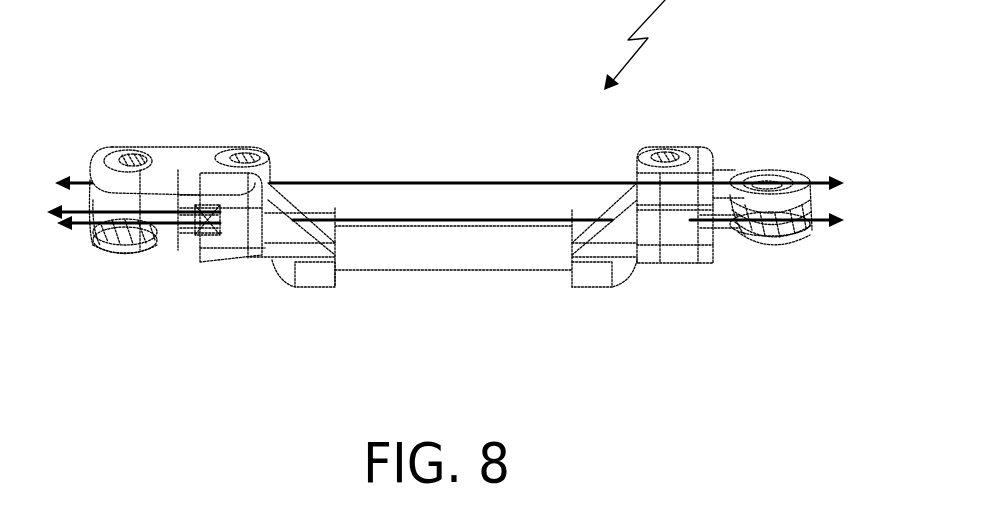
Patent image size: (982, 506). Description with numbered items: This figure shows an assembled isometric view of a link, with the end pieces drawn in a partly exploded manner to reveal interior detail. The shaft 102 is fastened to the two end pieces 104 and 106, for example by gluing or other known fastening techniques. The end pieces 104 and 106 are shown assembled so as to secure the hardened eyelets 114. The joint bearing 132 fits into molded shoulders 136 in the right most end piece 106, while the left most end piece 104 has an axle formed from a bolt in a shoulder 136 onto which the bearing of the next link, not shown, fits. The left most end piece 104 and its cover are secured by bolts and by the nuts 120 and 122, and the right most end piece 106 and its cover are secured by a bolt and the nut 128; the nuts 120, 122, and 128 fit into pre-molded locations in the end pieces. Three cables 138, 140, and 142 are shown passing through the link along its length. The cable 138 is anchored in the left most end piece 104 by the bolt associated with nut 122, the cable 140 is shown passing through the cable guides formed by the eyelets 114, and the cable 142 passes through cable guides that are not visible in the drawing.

The shaft 102 is at (393, 218).
The left most end piece 104 is at (257, 237).
The right most end piece 106 is at (640, 255).
The hardened eyelets 114 is at (202, 240).
The nut 120 is at (140, 148).
The nut 122 is at (285, 138).
The nut 128 is at (655, 148).
The joint bearing 132 is at (762, 170).
The molded shoulders 136 is at (180, 142).
The cable 138 is at (85, 215).
The cable 140 is at (92, 246).
The cable 142 is at (80, 198).